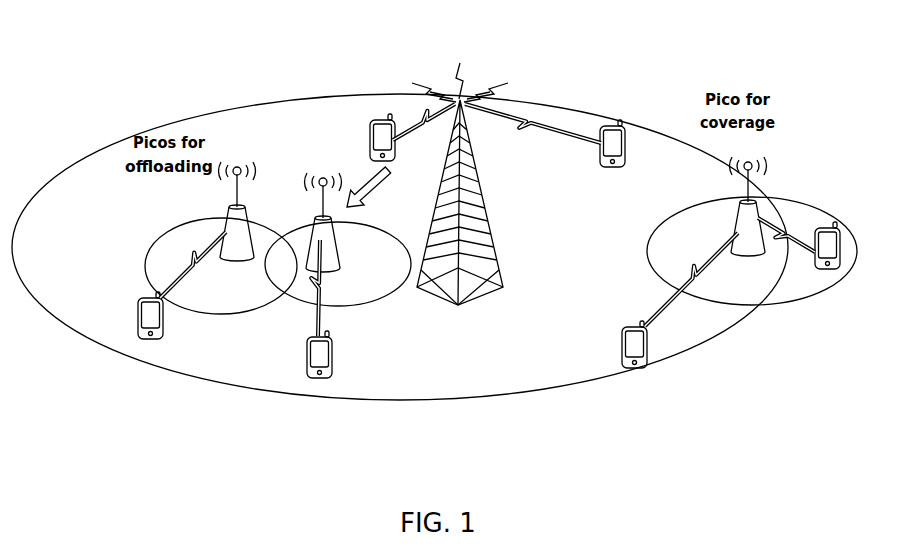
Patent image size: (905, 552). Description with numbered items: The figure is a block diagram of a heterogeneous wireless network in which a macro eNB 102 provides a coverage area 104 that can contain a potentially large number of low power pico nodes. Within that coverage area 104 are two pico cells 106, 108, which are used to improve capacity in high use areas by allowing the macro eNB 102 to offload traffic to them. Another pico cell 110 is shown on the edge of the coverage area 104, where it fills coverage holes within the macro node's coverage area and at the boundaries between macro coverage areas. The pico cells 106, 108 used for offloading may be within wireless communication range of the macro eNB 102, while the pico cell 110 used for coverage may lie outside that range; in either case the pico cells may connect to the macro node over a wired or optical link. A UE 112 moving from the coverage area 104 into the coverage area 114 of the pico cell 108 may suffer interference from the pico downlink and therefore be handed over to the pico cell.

The macro eNB 102 is at (440, 300).
The coverage area 104 is at (261, 104).
The pico cell 106 is at (225, 212).
The pico cell 108 is at (313, 217).
The pico cell 110 is at (733, 213).
The UE 112 is at (383, 118).
The coverage area 114 is at (386, 299).